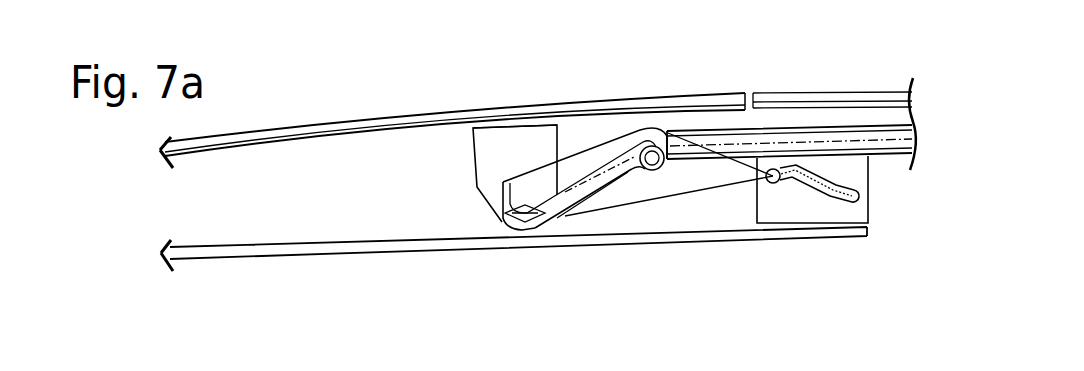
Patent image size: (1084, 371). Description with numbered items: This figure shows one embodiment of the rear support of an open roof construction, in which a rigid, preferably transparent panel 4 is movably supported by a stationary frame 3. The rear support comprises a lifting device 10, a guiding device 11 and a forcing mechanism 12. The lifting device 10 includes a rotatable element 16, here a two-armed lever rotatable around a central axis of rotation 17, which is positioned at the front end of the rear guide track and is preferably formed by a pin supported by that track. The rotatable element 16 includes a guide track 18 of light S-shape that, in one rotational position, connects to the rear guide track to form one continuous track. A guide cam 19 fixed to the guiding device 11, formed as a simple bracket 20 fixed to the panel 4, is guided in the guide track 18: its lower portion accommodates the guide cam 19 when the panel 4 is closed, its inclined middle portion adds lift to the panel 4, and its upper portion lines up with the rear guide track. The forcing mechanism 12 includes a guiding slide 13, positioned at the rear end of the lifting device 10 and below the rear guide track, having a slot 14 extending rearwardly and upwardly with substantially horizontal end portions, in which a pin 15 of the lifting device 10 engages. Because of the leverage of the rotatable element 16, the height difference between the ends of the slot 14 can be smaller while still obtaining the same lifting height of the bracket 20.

The frame 3 is at (255, 252).
The panel 4 is at (323, 127).
The lifting device 10 is at (697, 200).
The guiding device 11 is at (498, 128).
The forcing mechanism 12 is at (880, 204).
The guiding slide 13 is at (858, 213).
The slot 14 is at (830, 207).
The pin 15 is at (772, 185).
The rotatable element 16 is at (628, 200).
The axis of rotation 17 is at (680, 137).
The guide track 18 is at (565, 220).
The guide cam 19 is at (518, 230).
The bracket 20 is at (537, 138).